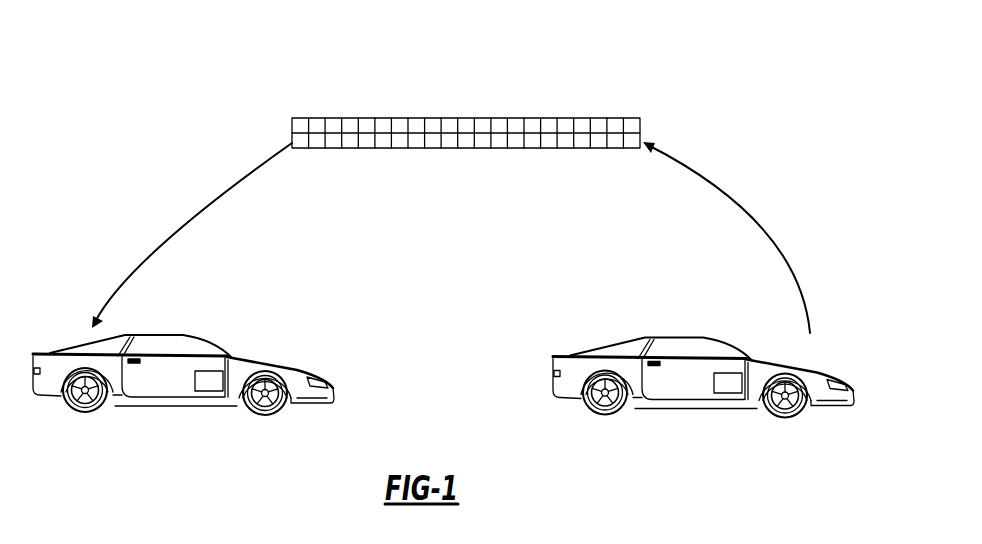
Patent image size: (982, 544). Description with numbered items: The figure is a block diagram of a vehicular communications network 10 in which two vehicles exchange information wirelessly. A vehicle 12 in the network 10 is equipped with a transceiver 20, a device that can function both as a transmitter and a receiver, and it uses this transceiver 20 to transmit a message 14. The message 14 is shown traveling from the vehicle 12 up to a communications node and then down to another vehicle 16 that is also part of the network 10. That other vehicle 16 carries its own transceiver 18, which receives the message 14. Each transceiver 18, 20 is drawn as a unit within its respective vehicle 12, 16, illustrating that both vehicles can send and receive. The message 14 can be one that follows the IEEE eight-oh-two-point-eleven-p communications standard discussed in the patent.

The vehicular communications network 10 is at (200, 98).
The vehicle 12 is at (703, 416).
The message 14 is at (409, 118).
The another vehicle 16 is at (183, 407).
The transceiver 18 is at (208, 380).
The transceiver 20 is at (728, 382).